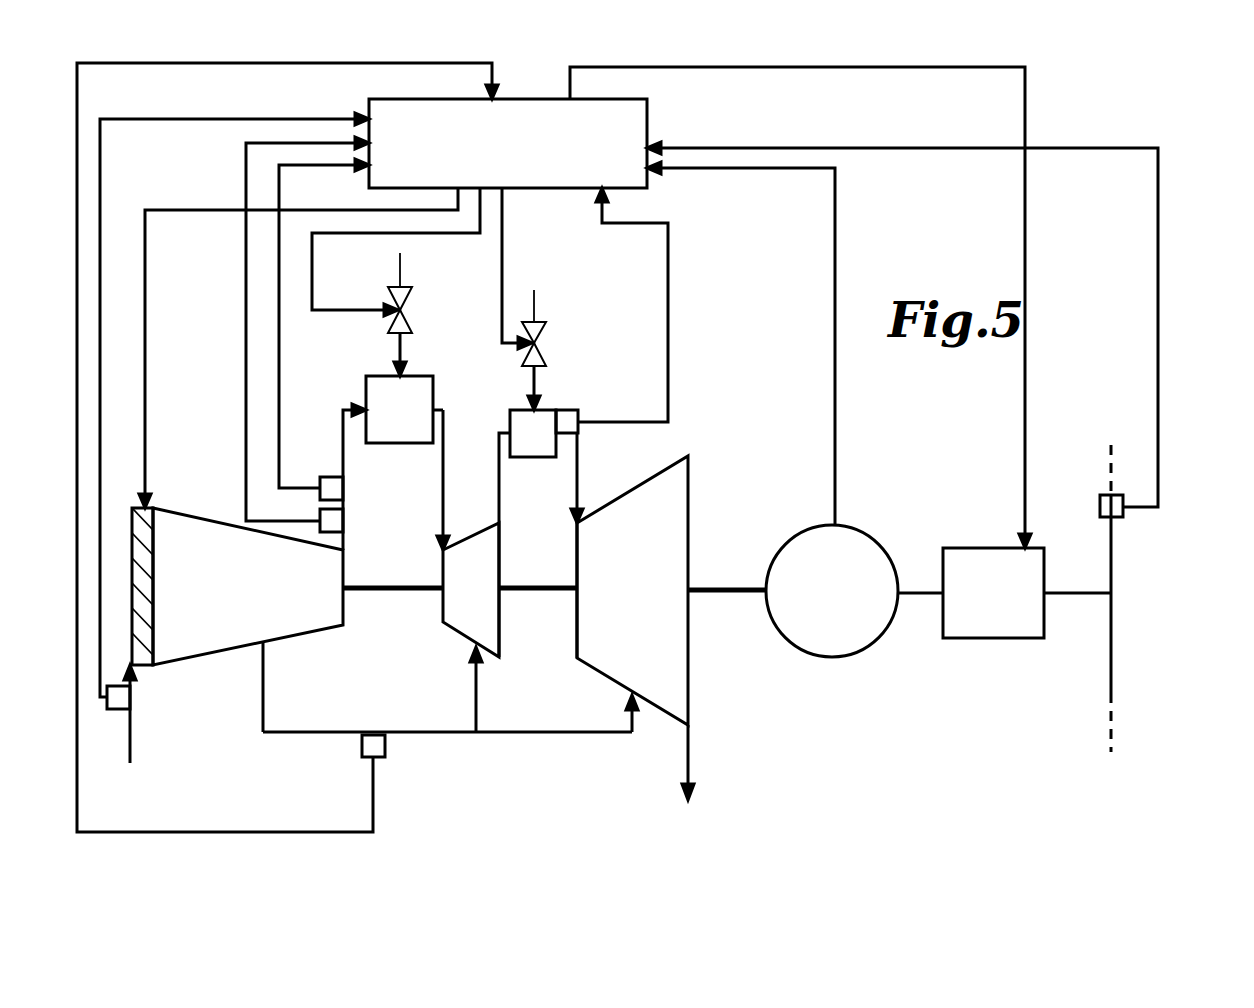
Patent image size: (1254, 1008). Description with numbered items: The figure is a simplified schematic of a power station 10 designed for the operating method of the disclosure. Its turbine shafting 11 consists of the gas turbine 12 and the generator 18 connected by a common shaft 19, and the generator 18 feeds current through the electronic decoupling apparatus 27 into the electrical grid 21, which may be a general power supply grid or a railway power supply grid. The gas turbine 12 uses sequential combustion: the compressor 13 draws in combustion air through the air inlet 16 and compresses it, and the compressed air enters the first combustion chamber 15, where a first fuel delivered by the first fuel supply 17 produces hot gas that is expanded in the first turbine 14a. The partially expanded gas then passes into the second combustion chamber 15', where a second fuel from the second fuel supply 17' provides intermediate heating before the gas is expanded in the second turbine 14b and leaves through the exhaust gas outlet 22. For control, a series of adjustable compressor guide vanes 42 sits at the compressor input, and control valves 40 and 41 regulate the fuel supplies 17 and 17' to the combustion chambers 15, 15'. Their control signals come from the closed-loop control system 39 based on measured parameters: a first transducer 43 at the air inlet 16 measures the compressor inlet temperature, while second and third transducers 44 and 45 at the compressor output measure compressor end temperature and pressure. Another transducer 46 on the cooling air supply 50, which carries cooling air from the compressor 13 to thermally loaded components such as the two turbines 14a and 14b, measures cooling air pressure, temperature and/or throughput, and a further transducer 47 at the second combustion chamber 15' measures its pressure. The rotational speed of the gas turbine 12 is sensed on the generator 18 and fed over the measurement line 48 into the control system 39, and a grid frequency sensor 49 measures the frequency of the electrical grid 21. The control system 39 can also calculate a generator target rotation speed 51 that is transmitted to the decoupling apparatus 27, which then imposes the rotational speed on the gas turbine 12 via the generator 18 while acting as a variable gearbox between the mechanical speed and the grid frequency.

The power station 10 is at (930, 735).
The turbine shafting 11 is at (516, 527).
The gas turbine 12 is at (525, 705).
The compressor 13 is at (213, 604).
The first turbine 14a is at (465, 620).
The second turbine 14b is at (612, 606).
The first combustion chamber 15 is at (372, 442).
The second combustion chamber 15' is at (506, 418).
The air inlet 16 is at (132, 722).
The first fuel supply 17 is at (436, 350).
The second fuel supply 17' is at (586, 362).
The generator 18 is at (815, 608).
The shaft 19 is at (712, 586).
The electrical grid 21 is at (1113, 638).
The exhaust gas outlet 22 is at (690, 760).
The decoupling apparatus 27 is at (977, 593).
The closed-loop control system 39 is at (480, 164).
The control valve 40 is at (408, 298).
The control valve 41 is at (540, 337).
The adjustable compressor guide vanes 42 is at (143, 518).
The first transducer 43 is at (120, 698).
The second transducer 44 is at (332, 488).
The third transducer 45 is at (332, 522).
The transducer 46 is at (375, 745).
The transducer 47 is at (565, 422).
The measurement line 48 is at (838, 248).
The grid frequency sensor 49 is at (1123, 505).
The cooling air supply 50 is at (508, 735).
The generator target rotation speed 51 is at (1028, 104).